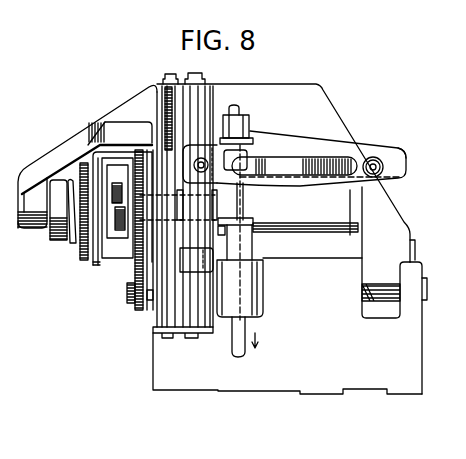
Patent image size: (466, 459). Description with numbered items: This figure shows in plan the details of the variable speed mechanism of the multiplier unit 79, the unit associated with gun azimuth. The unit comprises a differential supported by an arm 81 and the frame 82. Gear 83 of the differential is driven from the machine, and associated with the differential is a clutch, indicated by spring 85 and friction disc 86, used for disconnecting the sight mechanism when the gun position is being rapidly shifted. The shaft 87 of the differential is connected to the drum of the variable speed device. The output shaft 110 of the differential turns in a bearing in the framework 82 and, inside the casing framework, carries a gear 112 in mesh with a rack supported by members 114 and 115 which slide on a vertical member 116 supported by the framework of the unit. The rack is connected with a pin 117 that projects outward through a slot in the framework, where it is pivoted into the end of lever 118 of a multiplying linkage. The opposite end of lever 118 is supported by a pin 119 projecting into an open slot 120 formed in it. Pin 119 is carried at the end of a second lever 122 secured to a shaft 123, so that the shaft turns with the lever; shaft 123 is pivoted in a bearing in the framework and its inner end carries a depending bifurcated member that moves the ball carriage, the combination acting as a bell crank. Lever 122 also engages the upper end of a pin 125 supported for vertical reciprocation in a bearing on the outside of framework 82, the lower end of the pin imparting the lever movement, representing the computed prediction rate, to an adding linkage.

The multiplier unit 79 is at (423, 273).
The arm 81 is at (62, 160).
The frame 82 is at (153, 372).
The gear 83 is at (84, 256).
The spring 85 is at (78, 240).
The friction disc 86 is at (97, 262).
The shaft 87 is at (146, 302).
The output shaft 110 is at (175, 212).
The gear 112 is at (213, 210).
The member 114 is at (217, 254).
The member 115 is at (207, 116).
The vertical member 116 is at (205, 100).
The pin 117 is at (237, 172).
The lever 118 is at (236, 210).
The pin 119 is at (386, 166).
The open slot 120 is at (402, 160).
The second lever 122 is at (318, 143).
The shaft 123 is at (300, 152).
The pin 125 is at (245, 325).